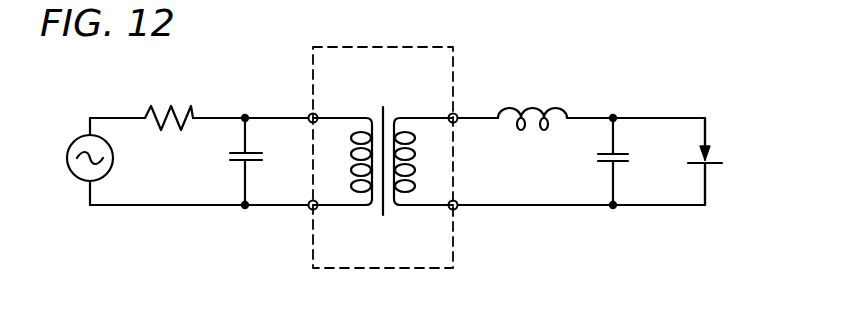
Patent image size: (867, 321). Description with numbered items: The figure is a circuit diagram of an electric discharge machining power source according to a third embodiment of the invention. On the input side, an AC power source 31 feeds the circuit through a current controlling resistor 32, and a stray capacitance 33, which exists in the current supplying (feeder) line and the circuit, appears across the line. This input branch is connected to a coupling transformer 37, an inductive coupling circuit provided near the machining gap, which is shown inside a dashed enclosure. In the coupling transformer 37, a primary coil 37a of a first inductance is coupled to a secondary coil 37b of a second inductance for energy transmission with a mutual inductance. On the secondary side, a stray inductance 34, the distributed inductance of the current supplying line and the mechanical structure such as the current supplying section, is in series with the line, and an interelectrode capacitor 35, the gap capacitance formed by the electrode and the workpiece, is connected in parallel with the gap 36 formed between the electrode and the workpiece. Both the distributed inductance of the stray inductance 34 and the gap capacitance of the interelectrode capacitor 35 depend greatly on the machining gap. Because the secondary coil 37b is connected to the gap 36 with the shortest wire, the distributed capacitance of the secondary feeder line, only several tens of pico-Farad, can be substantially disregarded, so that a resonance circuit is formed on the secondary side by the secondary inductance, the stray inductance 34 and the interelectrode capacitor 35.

The AC power source 31 is at (78, 182).
The current controlling resistor 32 is at (177, 125).
The stray capacitance 33 is at (252, 163).
The stray inductance 34 is at (530, 130).
The interelectrode capacitor 35 is at (630, 160).
The gap 36 is at (718, 160).
The coupling transformer 37 is at (422, 160).
The primary coil 37a is at (365, 207).
The secondary coil 37b is at (408, 207).